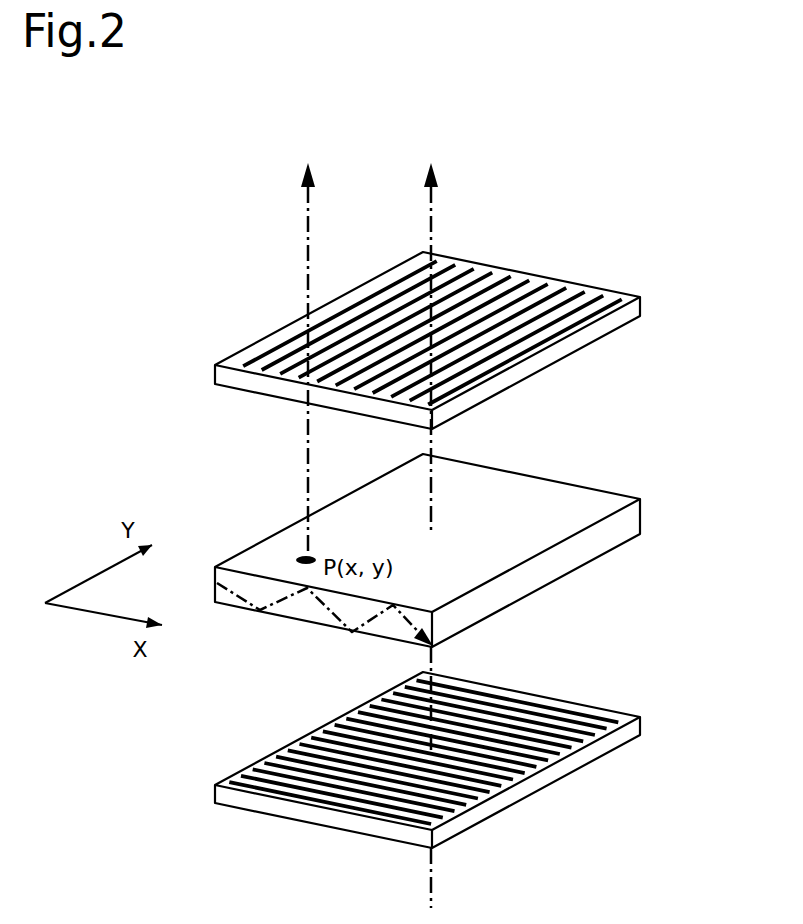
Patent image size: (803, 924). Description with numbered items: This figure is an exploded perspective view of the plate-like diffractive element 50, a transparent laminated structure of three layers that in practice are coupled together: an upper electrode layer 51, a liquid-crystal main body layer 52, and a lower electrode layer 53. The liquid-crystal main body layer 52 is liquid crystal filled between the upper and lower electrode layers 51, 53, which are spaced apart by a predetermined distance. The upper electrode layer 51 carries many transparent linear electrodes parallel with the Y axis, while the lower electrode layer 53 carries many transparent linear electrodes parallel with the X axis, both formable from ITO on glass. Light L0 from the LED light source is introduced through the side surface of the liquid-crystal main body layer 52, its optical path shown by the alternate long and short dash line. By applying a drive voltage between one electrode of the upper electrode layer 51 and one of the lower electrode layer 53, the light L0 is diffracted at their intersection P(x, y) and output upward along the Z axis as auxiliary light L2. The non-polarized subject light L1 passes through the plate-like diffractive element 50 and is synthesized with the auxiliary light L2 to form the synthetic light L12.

The plate-like diffractive element 50 is at (489, 550).
The upper electrode layer 51 is at (604, 326).
The liquid-crystal main body layer 52 is at (603, 512).
The lower electrode layer 53 is at (456, 760).
The light L0 is at (217, 583).
The subject light L1 is at (430, 520).
The auxiliary light L2 is at (308, 342).
The synthetic light L12 is at (455, 121).